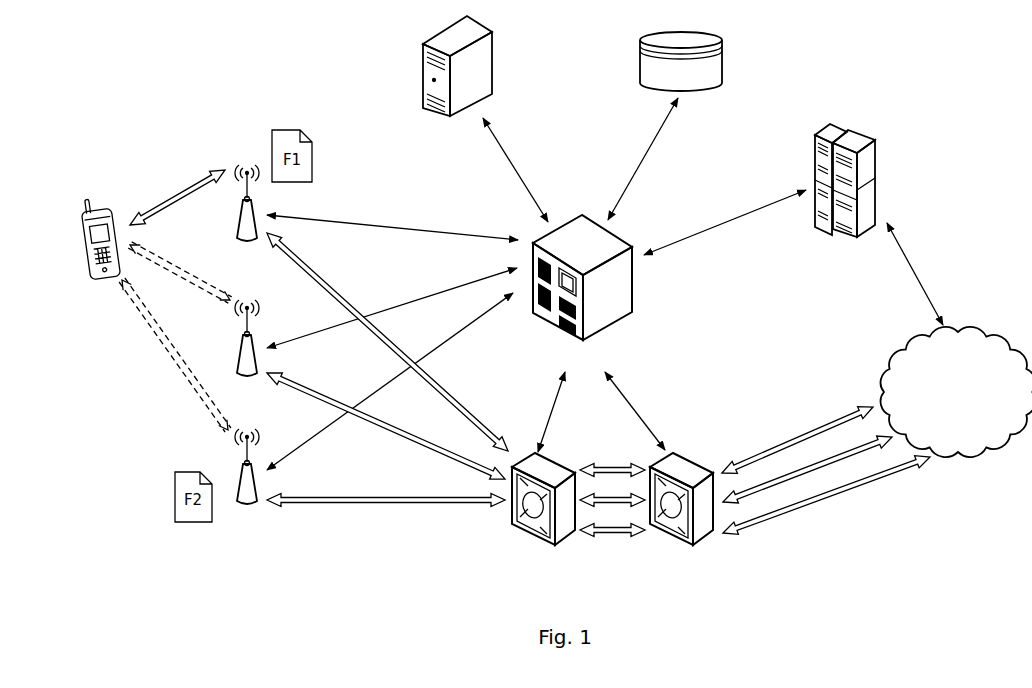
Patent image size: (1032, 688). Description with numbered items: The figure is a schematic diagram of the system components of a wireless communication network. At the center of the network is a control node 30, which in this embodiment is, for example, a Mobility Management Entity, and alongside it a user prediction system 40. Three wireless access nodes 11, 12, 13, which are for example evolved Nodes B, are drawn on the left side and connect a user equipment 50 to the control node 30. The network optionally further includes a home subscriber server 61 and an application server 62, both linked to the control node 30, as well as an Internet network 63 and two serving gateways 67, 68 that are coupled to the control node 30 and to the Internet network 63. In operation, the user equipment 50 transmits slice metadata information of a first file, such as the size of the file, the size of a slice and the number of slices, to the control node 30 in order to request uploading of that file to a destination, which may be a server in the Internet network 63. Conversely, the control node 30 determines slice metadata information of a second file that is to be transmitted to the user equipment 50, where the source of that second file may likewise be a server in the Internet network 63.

The wireless access node 11 is at (247, 216).
The wireless access node 12 is at (247, 351).
The wireless access node 13 is at (247, 480).
The control node 30 is at (582, 292).
The user prediction system 40 is at (457, 81).
The user equipment 50 is at (100, 252).
The home subscriber server 61 is at (681, 61).
The application server 62 is at (845, 194).
The Internet network 63 is at (956, 392).
The serving gateway 67 is at (543, 513).
The serving gateway 68 is at (681, 513).